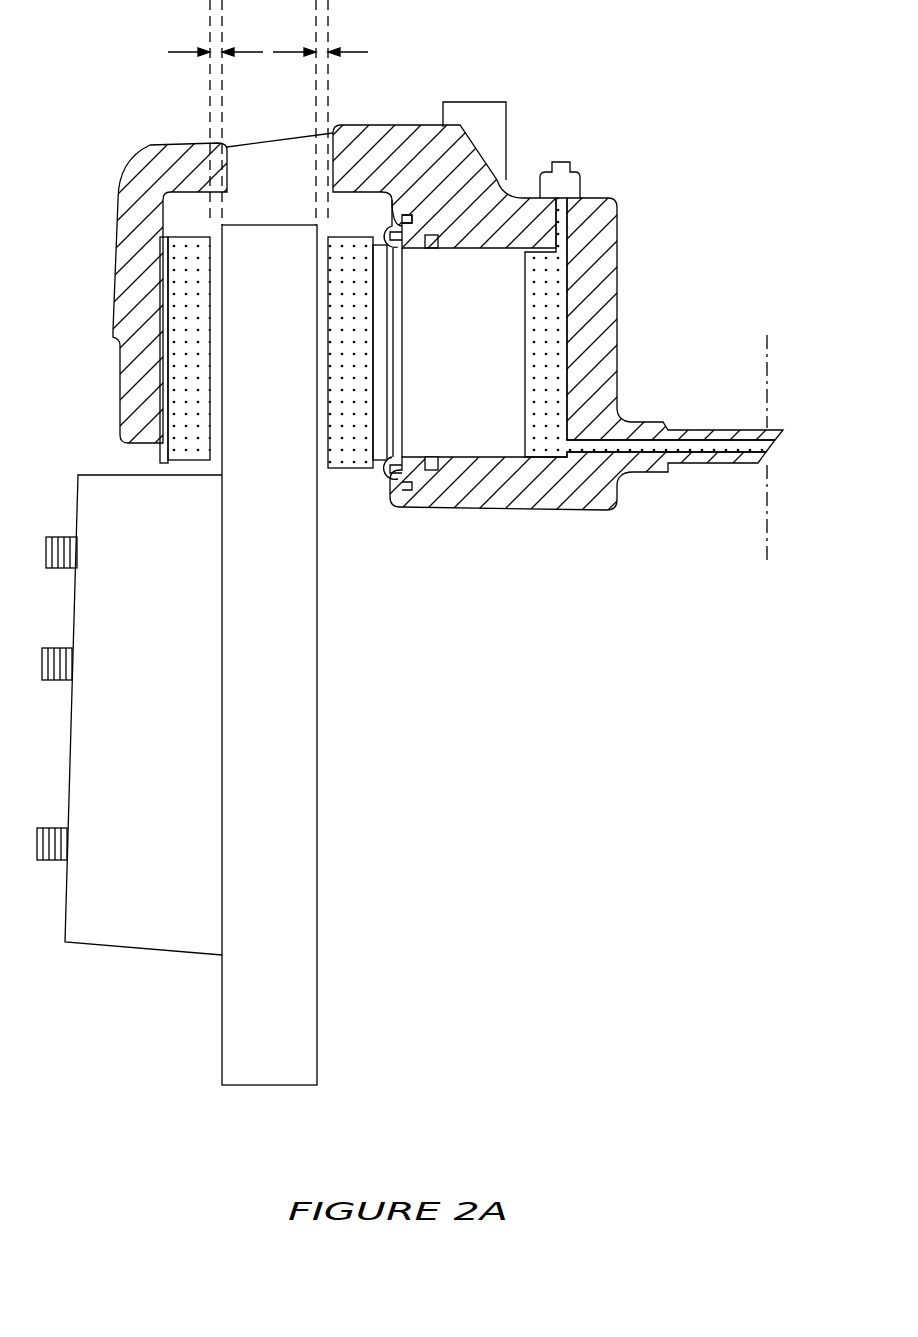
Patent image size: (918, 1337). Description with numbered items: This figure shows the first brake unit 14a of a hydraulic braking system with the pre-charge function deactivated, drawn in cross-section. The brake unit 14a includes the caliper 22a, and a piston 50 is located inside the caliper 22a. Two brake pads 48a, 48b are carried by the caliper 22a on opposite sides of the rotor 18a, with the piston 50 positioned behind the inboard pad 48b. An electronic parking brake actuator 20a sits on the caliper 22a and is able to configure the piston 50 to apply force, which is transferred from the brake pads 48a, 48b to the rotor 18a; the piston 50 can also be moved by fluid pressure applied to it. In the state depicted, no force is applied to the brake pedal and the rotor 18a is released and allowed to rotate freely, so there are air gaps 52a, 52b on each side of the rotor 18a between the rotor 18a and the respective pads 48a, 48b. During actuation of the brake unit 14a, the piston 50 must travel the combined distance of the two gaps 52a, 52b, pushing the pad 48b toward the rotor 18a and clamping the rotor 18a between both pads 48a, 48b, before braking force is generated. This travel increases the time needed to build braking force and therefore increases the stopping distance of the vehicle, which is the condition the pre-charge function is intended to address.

The first brake unit 14a is at (694, 216).
The rotor 18a is at (248, 1027).
The electronic parking brake actuator 20a is at (508, 127).
The caliper 22a is at (425, 142).
The brake pad 48a is at (190, 237).
The brake pad 48b is at (340, 237).
The piston 50 is at (527, 345).
The air gap 52a is at (168, 52).
The air gap 52b is at (368, 52).